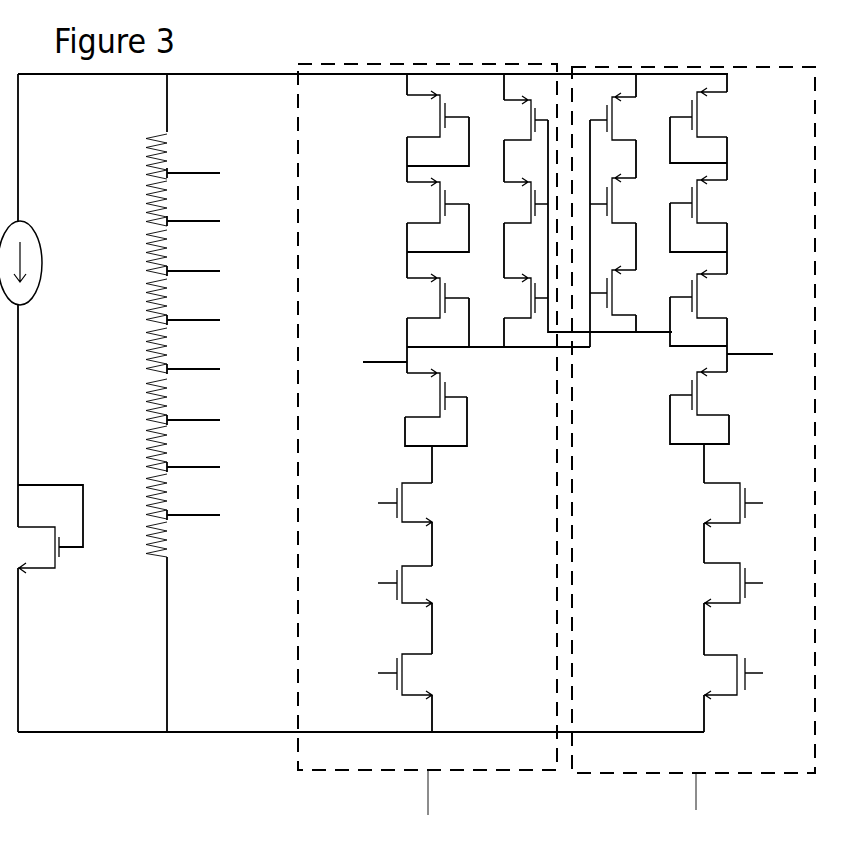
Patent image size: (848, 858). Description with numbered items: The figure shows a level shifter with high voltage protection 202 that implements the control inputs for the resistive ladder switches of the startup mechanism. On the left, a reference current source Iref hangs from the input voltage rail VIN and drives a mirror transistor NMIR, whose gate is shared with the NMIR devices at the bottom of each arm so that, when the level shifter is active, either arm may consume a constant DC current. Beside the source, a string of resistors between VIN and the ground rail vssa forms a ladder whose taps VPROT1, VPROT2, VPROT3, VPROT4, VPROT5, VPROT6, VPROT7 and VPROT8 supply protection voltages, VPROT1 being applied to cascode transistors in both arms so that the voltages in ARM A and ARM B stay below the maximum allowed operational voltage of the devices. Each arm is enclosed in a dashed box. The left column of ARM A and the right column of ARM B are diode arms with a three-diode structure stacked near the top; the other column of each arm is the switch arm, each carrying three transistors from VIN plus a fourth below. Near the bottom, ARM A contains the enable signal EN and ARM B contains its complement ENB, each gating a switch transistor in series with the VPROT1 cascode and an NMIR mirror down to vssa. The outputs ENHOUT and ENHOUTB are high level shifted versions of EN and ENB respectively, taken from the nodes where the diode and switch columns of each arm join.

The level shifter 202 is at (763, 43).
The input voltage VIN is at (373, 65).
The ground rail vssa is at (361, 718).
The reference current source Iref is at (36, 264).
The current mirror transistor NMIR is at (400, 579).
The protection voltage tap 1 VPROT1 is at (484, 505).
The protection voltage tap 2 VPROT2 is at (201, 460).
The protection voltage tap 3 VPROT3 is at (201, 413).
The protection voltage tap 4 VPROT4 is at (201, 362).
The protection voltage tap 5 VPROT5 is at (198, 313).
The protection voltage tap 6 VPROT6 is at (201, 264).
The protection voltage tap 7 VPROT7 is at (201, 214).
The protection voltage tap 8 VPROT8 is at (201, 166).
The level shifted enable complement output ENHOUTB is at (446, 352).
The level shifted enable output ENHOUT is at (759, 338).
The enable signal EN is at (392, 586).
The enable complement signal ENB is at (739, 585).